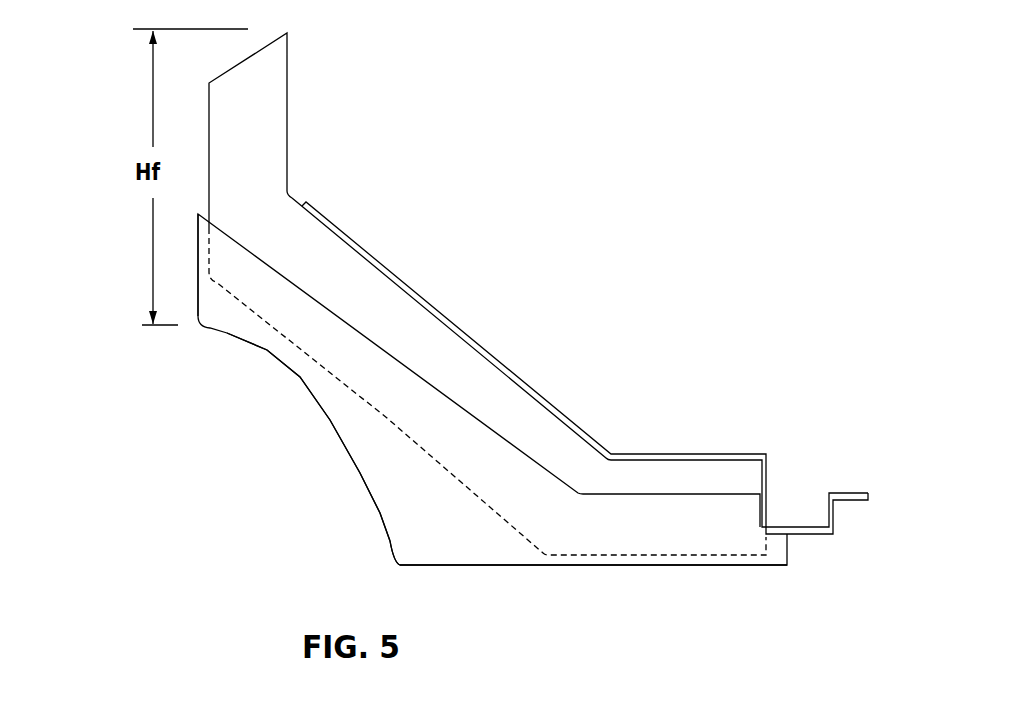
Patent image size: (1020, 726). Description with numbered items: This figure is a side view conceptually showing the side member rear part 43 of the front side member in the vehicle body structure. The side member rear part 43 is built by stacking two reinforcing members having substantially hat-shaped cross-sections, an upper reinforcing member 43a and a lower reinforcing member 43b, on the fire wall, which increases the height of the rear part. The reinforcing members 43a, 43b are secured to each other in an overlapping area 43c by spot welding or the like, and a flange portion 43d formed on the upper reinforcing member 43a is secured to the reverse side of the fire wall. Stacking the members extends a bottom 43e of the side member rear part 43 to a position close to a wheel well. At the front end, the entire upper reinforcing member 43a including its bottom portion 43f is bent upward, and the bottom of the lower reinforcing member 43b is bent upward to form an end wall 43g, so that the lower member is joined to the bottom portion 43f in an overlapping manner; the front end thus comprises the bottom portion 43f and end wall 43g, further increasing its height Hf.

The side member rear part 43 is at (442, 293).
The upper reinforcing member 43a is at (502, 395).
The lower reinforcing member 43b is at (385, 520).
The overlapping area 43c is at (253, 309).
The flange portion 43d is at (330, 222).
The bottom 43e is at (327, 427).
The bottom portion 43f is at (209, 132).
The end wall 43g is at (198, 290).